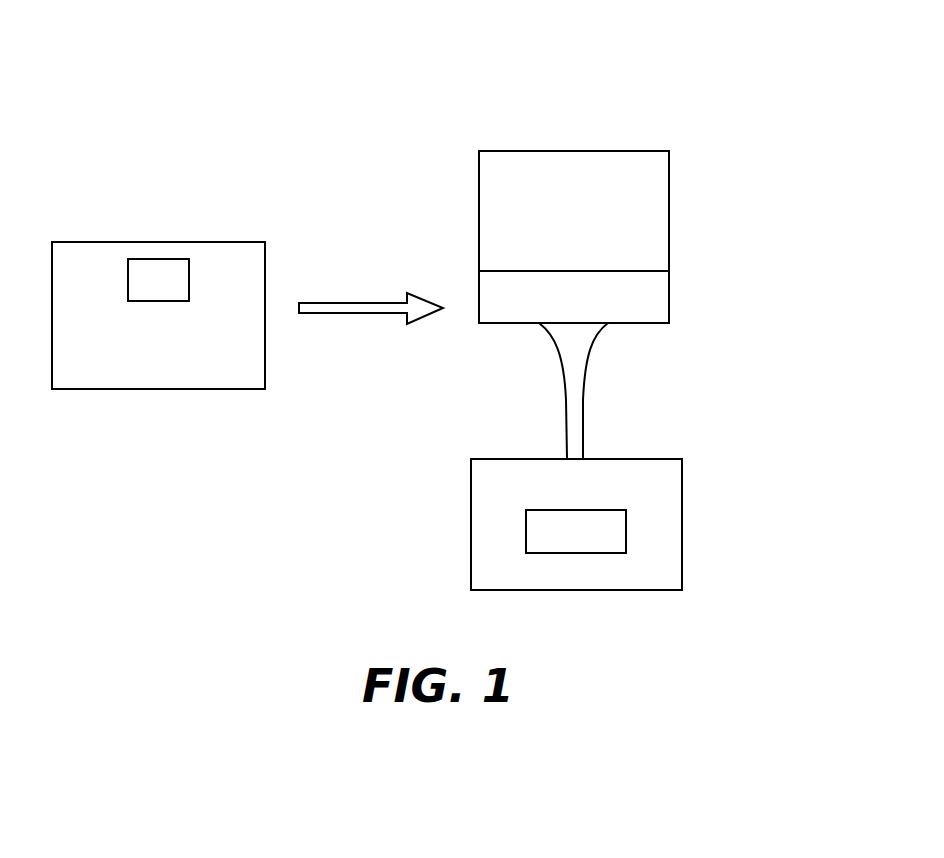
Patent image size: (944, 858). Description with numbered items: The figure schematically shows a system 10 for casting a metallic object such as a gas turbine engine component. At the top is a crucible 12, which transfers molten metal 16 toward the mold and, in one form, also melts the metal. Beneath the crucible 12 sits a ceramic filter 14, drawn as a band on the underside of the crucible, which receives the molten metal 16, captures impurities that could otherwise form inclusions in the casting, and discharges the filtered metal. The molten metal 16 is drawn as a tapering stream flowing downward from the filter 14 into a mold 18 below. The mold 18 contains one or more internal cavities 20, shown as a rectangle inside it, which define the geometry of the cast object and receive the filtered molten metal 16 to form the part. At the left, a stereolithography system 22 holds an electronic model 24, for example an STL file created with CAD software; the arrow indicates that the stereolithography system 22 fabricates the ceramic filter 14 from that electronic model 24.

The system for casting a metallic object 10 is at (733, 61).
The crucible 12 is at (670, 198).
The ceramic filter 14 is at (670, 295).
The molten metal 16 is at (585, 393).
The mold 18 is at (682, 513).
The internal cavities 20 is at (560, 553).
The stereolithography system 22 is at (101, 389).
The electronic model 24 is at (128, 284).